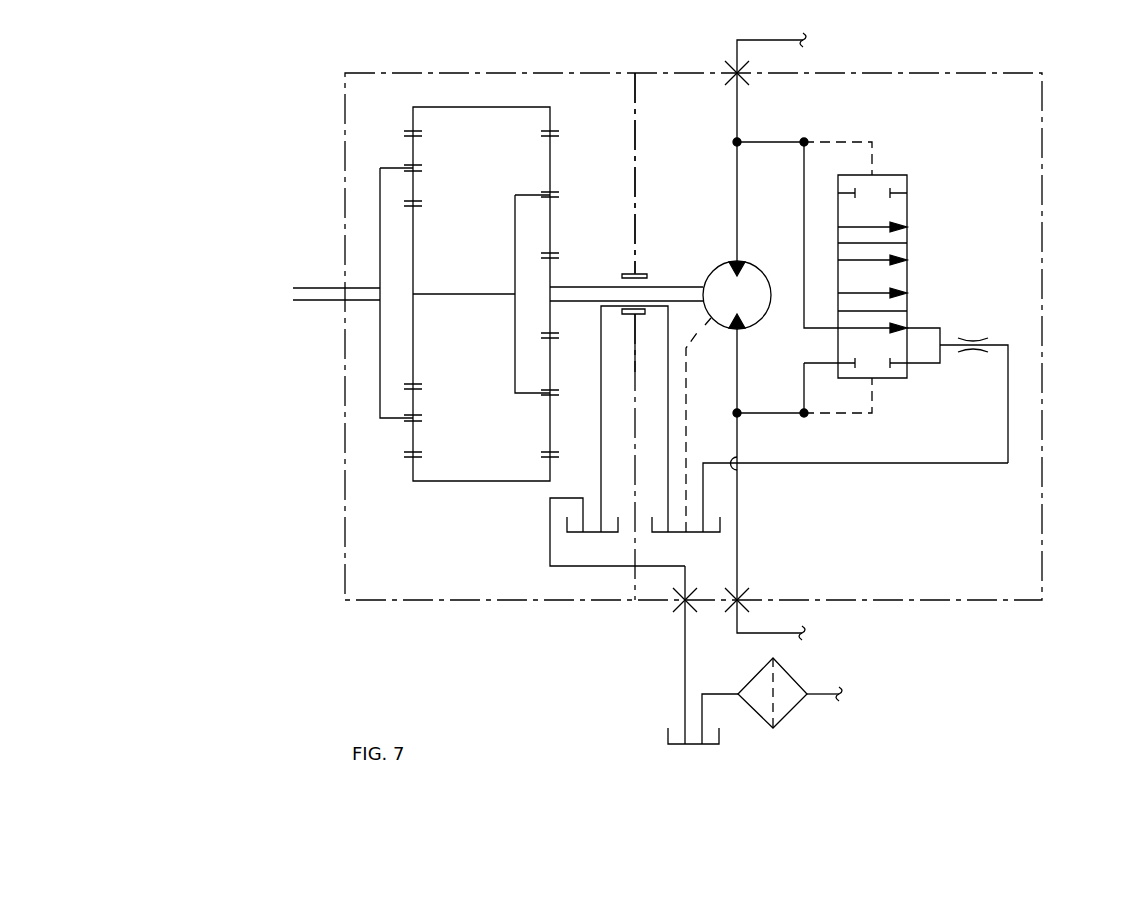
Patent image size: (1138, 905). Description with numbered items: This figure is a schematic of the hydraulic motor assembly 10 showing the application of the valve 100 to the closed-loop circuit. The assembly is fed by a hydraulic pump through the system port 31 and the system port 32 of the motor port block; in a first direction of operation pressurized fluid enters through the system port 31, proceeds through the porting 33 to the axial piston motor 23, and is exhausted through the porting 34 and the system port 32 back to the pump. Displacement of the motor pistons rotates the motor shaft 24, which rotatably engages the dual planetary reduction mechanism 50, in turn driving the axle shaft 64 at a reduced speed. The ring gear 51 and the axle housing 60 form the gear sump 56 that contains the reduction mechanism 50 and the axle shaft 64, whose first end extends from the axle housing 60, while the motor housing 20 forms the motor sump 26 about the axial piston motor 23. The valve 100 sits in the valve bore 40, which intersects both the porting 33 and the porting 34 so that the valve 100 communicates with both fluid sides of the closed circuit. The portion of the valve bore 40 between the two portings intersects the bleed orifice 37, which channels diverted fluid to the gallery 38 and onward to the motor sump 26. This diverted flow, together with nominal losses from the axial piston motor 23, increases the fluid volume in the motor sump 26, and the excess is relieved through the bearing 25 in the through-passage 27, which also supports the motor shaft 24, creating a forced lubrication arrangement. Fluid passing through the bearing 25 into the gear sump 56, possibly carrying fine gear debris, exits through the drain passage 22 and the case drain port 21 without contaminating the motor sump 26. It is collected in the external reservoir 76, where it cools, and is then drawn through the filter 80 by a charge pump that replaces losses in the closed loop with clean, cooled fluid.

The hydraulic motor assembly 10 is at (233, 86).
The motor housing 20 is at (1042, 88).
The case drain port 21 is at (676, 610).
The drain passage 22 is at (565, 566).
The axial piston motor 23 is at (768, 322).
The motor shaft 24 is at (680, 287).
The needle bearing 25 is at (630, 274).
The motor sump 26 is at (712, 532).
The through-passage 27 is at (655, 312).
The system port 31 is at (728, 610).
The system port 32 is at (732, 62).
The porting 33 is at (737, 560).
The porting 34 is at (737, 106).
The bleed orifice 37 is at (975, 339).
The gallery 38 is at (855, 463).
The valve bore 40 is at (770, 142).
The dual planetary reduction mechanism 50 is at (427, 515).
The ring gear 51 is at (482, 107).
The gear sump 56 is at (608, 532).
The axle housing 60 is at (345, 85).
The axle shaft 64 is at (318, 287).
The external reservoir 76 is at (710, 744).
The filter 80 is at (790, 712).
The valve 100 is at (920, 273).